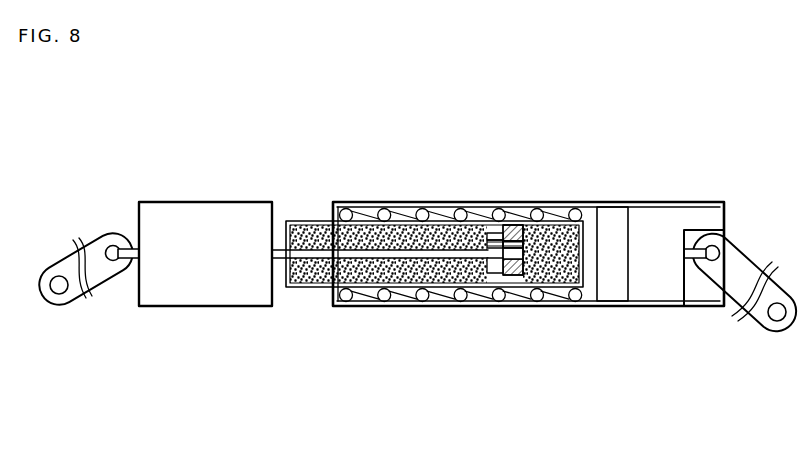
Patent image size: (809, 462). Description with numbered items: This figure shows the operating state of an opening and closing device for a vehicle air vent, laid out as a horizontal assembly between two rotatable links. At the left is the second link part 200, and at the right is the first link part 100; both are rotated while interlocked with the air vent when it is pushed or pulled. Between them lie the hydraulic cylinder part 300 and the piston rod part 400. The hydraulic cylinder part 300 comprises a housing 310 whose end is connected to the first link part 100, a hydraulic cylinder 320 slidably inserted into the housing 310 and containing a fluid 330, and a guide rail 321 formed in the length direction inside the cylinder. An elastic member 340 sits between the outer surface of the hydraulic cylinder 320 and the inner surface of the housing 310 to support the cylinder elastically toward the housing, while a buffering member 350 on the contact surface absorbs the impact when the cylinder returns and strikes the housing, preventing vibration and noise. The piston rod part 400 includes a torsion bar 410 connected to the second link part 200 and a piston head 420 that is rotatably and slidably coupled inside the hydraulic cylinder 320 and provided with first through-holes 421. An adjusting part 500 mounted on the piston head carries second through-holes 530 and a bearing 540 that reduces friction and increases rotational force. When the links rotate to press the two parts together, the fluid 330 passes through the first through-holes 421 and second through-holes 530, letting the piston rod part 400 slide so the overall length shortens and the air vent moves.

The first link part 100 is at (773, 324).
The second link part 200 is at (75, 294).
The hydraulic cylinder part 300 is at (505, 316).
The housing 310 is at (666, 298).
The hydraulic cylinder 320 is at (320, 287).
The guide rail 321 is at (284, 280).
The fluid 330 is at (553, 268).
The elastic member 340 is at (422, 296).
The buffering member 350 is at (610, 285).
The piston rod part 400 is at (331, 235).
The torsion bar 410 is at (205, 212).
The piston head 420 is at (500, 243).
The first through-holes 421 is at (453, 211).
The adjusting part 500 is at (544, 198).
The second through-holes 530 is at (532, 243).
The bearing 540 is at (523, 247).